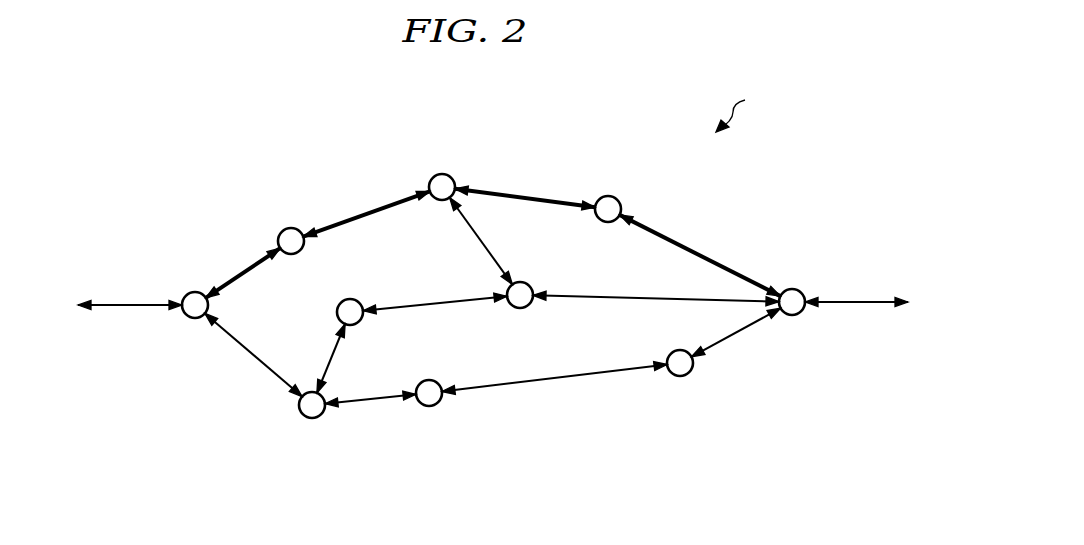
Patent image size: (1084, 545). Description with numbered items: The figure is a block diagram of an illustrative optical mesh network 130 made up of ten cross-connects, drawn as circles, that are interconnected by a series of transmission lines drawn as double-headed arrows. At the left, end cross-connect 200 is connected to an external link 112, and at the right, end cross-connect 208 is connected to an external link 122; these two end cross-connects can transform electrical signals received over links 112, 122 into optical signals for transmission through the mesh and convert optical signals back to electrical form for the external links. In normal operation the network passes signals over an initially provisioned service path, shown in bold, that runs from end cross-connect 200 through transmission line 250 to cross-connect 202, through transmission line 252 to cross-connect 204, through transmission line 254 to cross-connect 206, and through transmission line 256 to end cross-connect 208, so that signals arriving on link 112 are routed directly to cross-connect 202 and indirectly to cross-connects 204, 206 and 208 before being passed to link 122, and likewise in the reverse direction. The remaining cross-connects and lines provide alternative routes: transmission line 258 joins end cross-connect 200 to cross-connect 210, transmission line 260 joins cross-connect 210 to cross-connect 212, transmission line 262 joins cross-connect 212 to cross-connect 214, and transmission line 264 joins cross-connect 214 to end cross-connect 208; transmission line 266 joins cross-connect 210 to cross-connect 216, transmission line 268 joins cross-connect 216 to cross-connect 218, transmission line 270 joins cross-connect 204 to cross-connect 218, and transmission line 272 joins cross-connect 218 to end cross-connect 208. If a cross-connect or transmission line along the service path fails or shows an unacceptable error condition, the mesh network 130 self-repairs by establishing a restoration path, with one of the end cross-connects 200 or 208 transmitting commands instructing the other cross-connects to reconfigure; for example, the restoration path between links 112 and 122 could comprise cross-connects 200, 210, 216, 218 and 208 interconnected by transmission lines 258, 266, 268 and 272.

The link 112 is at (133, 303).
The link 122 is at (848, 300).
The optical mesh network 130 is at (750, 110).
The end cross-connect 200 is at (193, 288).
The cross-connect 202 is at (287, 227).
The cross-connect 204 is at (442, 174).
The cross-connect 206 is at (615, 197).
The end cross-connect 208 is at (795, 288).
The cross-connect 210 is at (305, 422).
The cross-connect 212 is at (427, 407).
The cross-connect 214 is at (680, 378).
The cross-connect 216 is at (350, 299).
The cross-connect 218 is at (522, 309).
The transmission line 250 is at (247, 263).
The transmission line 252 is at (375, 203).
The transmission line 254 is at (507, 196).
The transmission line 256 is at (685, 243).
The transmission line 258 is at (247, 355).
The transmission line 260 is at (360, 397).
The transmission line 262 is at (588, 377).
The transmission line 264 is at (738, 332).
The transmission line 266 is at (327, 362).
The transmission line 268 is at (455, 293).
The transmission line 270 is at (487, 251).
The transmission line 272 is at (608, 297).